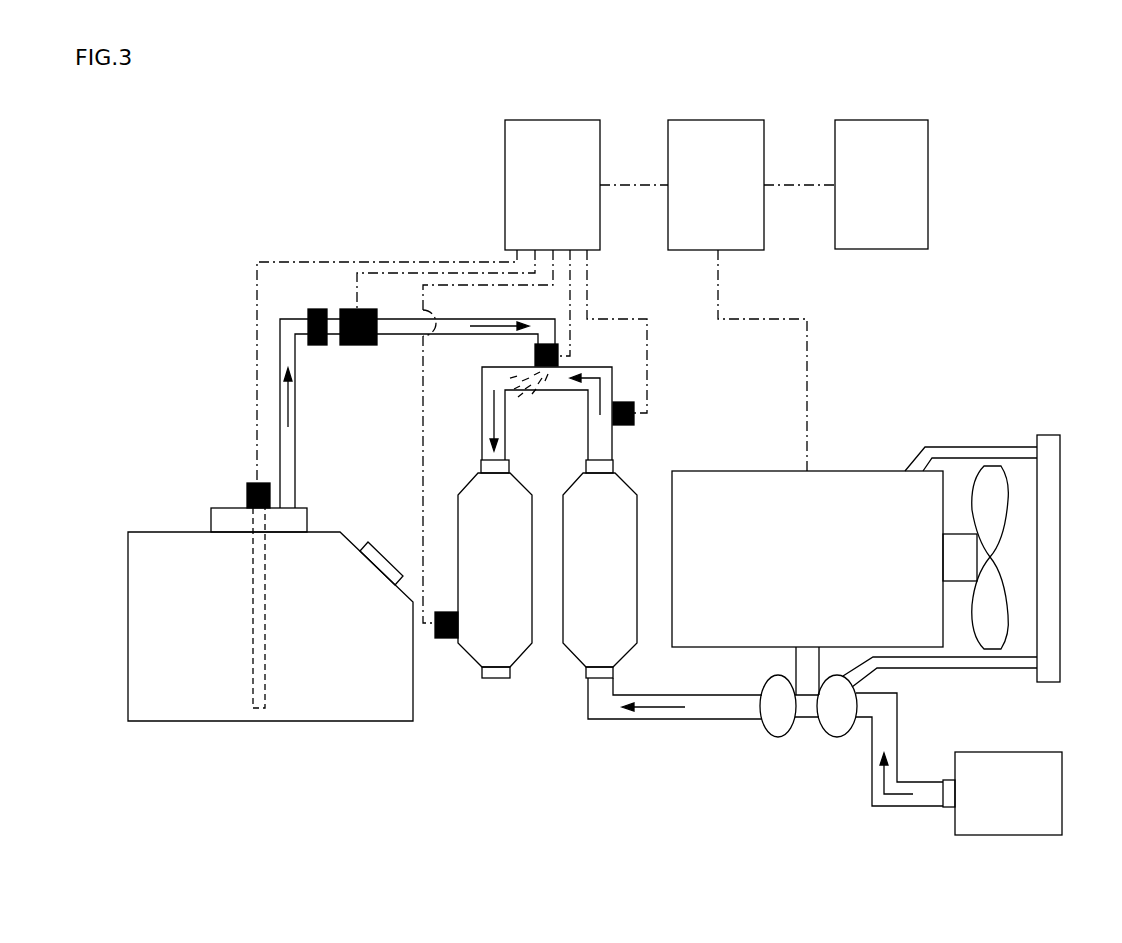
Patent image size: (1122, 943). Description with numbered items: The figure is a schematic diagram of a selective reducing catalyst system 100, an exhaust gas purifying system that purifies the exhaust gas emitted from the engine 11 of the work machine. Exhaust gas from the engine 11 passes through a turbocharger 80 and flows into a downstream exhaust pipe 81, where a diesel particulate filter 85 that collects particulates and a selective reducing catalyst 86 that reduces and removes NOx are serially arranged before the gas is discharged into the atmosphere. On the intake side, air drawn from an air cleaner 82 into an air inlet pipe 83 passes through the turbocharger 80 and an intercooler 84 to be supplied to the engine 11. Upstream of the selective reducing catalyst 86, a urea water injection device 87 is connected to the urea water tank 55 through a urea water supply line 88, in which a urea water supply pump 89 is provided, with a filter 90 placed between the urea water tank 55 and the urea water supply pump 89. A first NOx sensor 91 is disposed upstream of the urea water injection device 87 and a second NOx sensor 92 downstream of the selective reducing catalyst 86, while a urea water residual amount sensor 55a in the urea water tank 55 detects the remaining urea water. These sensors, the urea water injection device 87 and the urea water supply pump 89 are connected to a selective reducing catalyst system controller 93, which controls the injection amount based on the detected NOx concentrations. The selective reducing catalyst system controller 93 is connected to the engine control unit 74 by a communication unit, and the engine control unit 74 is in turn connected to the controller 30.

The selective reducing catalyst system 100 is at (275, 244).
The selective reducing catalyst system controller 93 is at (549, 119).
The engine control unit 74 is at (714, 119).
The controller 30 is at (914, 119).
The urea water supply line 88 is at (400, 335).
The filter 90 is at (317, 345).
The urea water supply pump 89 is at (358, 345).
The urea water injection device 87 is at (535, 356).
The first NOx sensor 91 is at (623, 425).
The selective reducing catalyst 86 is at (513, 641).
The diesel particulate filter 85 is at (583, 646).
The second NOx sensor 92 is at (445, 640).
The urea water tank 55 is at (338, 732).
The urea water residual amount sensor 55a is at (247, 494).
The engine 11 is at (868, 462).
The intercooler 84 is at (1062, 553).
The turbocharger 80 is at (806, 750).
The exhaust pipe 81 is at (698, 720).
The air inlet pipe 83 is at (897, 700).
The air cleaner 82 is at (1010, 752).